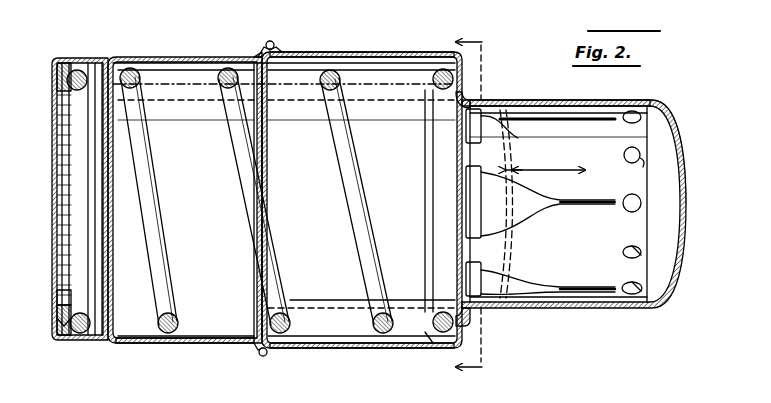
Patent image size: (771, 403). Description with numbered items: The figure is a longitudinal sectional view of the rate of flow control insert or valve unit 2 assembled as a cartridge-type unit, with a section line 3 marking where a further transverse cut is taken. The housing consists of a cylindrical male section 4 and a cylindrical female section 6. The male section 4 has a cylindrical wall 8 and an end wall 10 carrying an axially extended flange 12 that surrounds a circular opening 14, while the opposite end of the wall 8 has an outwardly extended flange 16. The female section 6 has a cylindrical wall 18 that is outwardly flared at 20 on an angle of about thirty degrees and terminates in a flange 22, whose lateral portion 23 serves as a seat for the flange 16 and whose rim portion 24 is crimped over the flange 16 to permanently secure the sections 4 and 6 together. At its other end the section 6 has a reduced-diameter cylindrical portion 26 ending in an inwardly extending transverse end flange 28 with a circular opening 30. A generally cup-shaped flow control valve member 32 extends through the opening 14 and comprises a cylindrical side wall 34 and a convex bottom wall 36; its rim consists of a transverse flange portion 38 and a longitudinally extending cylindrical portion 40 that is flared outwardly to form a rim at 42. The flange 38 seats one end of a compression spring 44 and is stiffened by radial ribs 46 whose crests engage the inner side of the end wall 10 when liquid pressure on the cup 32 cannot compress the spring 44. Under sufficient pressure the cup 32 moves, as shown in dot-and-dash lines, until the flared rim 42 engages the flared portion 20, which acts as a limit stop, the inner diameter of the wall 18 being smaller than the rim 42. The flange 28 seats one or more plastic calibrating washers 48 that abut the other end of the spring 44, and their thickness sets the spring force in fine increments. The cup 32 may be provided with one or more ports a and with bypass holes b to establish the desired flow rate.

The rate of flow control insert or valve unit 2 is at (335, 50).
The cylindrical male section 4 is at (401, 50).
The cylindrical female section 6 is at (165, 50).
The cylindrical wall 8 is at (372, 350).
The end wall 10 is at (458, 362).
The axially extended flange 12 is at (473, 97).
The circular opening 14 is at (462, 108).
The outwardly extended flange 16 is at (266, 356).
The cylindrical wall 18 is at (192, 350).
The outwardly flared portion 20 is at (256, 358).
The flange 22 is at (270, 41).
The lateral portion 23 is at (265, 44).
The rim portion 24 is at (277, 45).
The reduced-diameter cylindrical portion 26 is at (83, 345).
The transverse end flange 28 is at (57, 326).
The circular opening 30 is at (56, 102).
The flow control valve member 32 is at (360, 96).
The cylindrical side wall 34 is at (566, 103).
The convex bottom wall 36 is at (526, 246).
The transverse flange portion 38 is at (456, 92).
The longitudinally extending cylindrical portion 40 is at (440, 350).
The flared rim 42 is at (428, 334).
The compression spring 44 is at (378, 217).
The radial ribs 46 is at (472, 322).
The plastic calibrating washers 48 is at (68, 300).
The section line 3 is at (490, 208).
The ports a is at (506, 280).
The bypass holes b is at (639, 160).